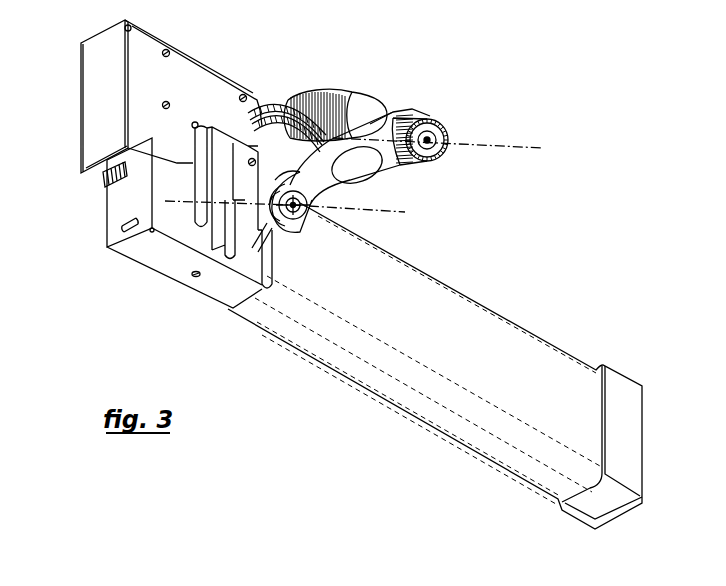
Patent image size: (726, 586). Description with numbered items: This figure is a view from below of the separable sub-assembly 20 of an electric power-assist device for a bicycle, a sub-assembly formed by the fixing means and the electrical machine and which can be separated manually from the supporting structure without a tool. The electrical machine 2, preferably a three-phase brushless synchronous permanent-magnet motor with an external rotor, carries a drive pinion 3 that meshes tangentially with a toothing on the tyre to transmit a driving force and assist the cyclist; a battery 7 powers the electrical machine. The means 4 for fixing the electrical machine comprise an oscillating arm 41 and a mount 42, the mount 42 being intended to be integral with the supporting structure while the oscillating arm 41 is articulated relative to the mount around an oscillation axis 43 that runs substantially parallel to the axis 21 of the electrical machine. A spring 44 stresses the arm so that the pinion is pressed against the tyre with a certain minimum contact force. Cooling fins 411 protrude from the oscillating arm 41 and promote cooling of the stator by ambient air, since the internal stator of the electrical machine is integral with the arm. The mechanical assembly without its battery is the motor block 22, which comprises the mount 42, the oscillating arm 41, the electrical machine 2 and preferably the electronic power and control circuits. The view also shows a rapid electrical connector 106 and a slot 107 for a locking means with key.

The electrical machine 2 is at (327, 93).
The drive pinion 3 is at (428, 127).
The means for fixing the electrical machine 4 is at (277, 362).
The battery 7 is at (483, 343).
The separable sub-assembly 20 is at (518, 99).
The axis of the electrical machine 21 is at (530, 147).
The motor block 22 is at (177, 303).
The oscillating arm 41 is at (320, 187).
The mount 42 is at (245, 173).
The oscillation axis 43 is at (386, 212).
The spring 44 is at (278, 172).
The rapid electrical connector 106 is at (105, 185).
The slot for a locking means with key 107 is at (122, 228).
The cooling fins 411 is at (400, 110).